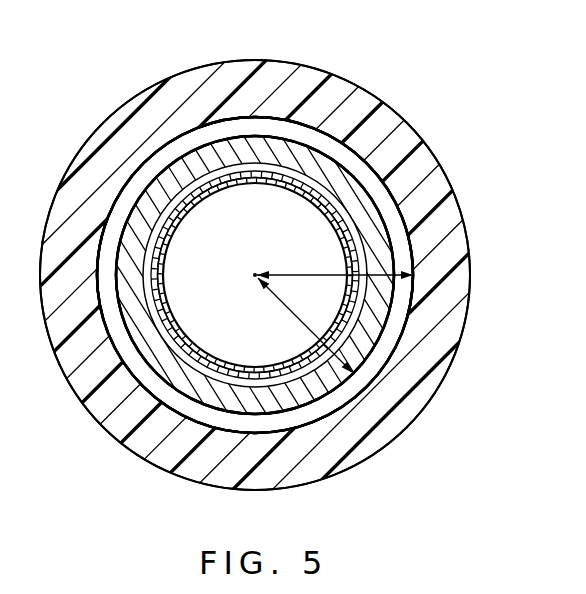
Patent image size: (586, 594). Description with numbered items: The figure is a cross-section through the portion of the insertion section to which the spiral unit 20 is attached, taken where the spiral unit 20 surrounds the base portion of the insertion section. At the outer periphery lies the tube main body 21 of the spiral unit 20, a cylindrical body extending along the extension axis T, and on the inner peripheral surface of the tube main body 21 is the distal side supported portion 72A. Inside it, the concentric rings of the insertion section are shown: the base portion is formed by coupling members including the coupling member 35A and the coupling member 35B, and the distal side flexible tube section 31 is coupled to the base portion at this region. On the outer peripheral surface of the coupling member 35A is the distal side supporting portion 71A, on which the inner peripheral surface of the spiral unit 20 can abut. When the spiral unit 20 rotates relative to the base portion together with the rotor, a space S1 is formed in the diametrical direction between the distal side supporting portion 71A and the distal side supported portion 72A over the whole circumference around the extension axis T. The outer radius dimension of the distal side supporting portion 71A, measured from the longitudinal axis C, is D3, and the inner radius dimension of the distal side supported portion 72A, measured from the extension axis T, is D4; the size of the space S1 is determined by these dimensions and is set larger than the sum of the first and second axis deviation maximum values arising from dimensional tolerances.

The spiral unit 20 is at (348, 90).
The tube main body 21 is at (255, 275).
The distal side supported portion 72A is at (135, 362).
The space S1 is at (236, 125).
The distal side supporting portion 71A is at (164, 384).
The coupling member 35A is at (333, 181).
The coupling member 35B is at (313, 197).
The distal side flexible tube section 31 is at (283, 189).
The inner radius dimension of the distal side supported portion D4 is at (335, 286).
The outer radius dimension of the distal side supporting portion D3 is at (305, 325).